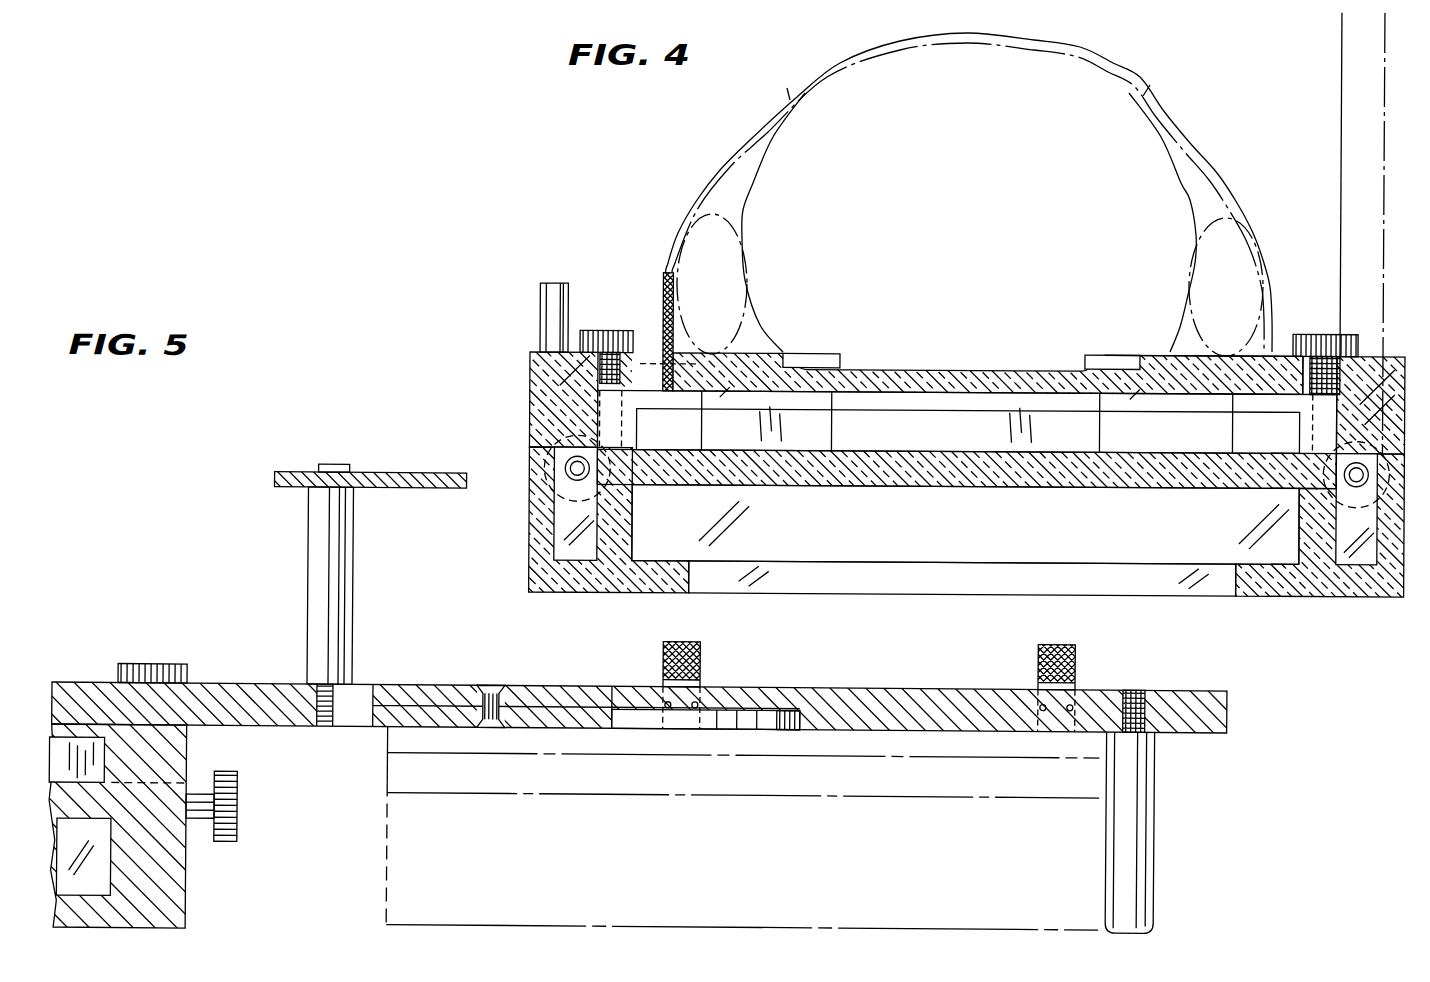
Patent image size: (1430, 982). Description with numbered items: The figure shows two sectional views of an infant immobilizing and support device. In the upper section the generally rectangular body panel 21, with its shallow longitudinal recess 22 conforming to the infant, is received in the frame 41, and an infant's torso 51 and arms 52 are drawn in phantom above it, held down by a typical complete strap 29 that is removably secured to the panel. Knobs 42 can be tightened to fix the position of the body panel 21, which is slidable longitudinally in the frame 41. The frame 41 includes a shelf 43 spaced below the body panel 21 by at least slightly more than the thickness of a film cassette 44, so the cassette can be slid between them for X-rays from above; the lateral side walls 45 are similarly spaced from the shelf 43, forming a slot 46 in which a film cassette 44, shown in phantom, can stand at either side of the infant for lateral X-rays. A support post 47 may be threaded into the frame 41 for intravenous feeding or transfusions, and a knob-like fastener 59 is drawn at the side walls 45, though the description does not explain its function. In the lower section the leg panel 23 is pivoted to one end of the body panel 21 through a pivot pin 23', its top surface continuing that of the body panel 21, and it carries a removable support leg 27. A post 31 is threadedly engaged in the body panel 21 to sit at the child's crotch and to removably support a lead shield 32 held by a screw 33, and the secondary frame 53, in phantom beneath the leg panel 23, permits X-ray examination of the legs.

In FIG. 4, the body panel 21 is at (1177, 352).
In FIG. 5, the body panel 21 is at (250, 690).
In FIG. 4, the shallow longitudinal recess 22 is at (945, 370).
In FIG. 5, the leg panel 23 is at (677, 691).
In FIG. 5, the pivot pin 23' is at (482, 687).
In FIG. 5, the removable support leg 27 is at (1140, 824).
In FIG. 4, the strap 29 is at (665, 285).
In FIG. 5, the strap 29 is at (692, 652).
In FIG. 5, the post 31 is at (333, 598).
In FIG. 5, the lead shield 32 is at (420, 478).
In FIG. 5, the screw 33 is at (338, 464).
In FIG. 4, the frame 41 is at (526, 472).
In FIG. 5, the frame 41 is at (196, 895).
In FIG. 4, the knob 42 is at (635, 330).
In FIG. 4, the shelf 43 is at (935, 443).
In FIG. 5, the shelf 43 is at (110, 775).
In FIG. 4, the film cassette 44 is at (1170, 437).
In FIG. 5, the film cassette 44 is at (95, 740).
In FIG. 4, the lateral side wall 45 is at (532, 546).
In FIG. 4, the slot 46 is at (573, 561).
In FIG. 4, the support post 47 is at (553, 312).
In FIG. 4, the infant's torso 51 is at (980, 244).
In FIG. 4, the arms 52 is at (724, 304).
In FIG. 5, the secondary frame 53 is at (388, 872).
In FIG. 4, the knob screw 59 is at (580, 452).
In FIG. 5, the knob screw 59 is at (238, 835).